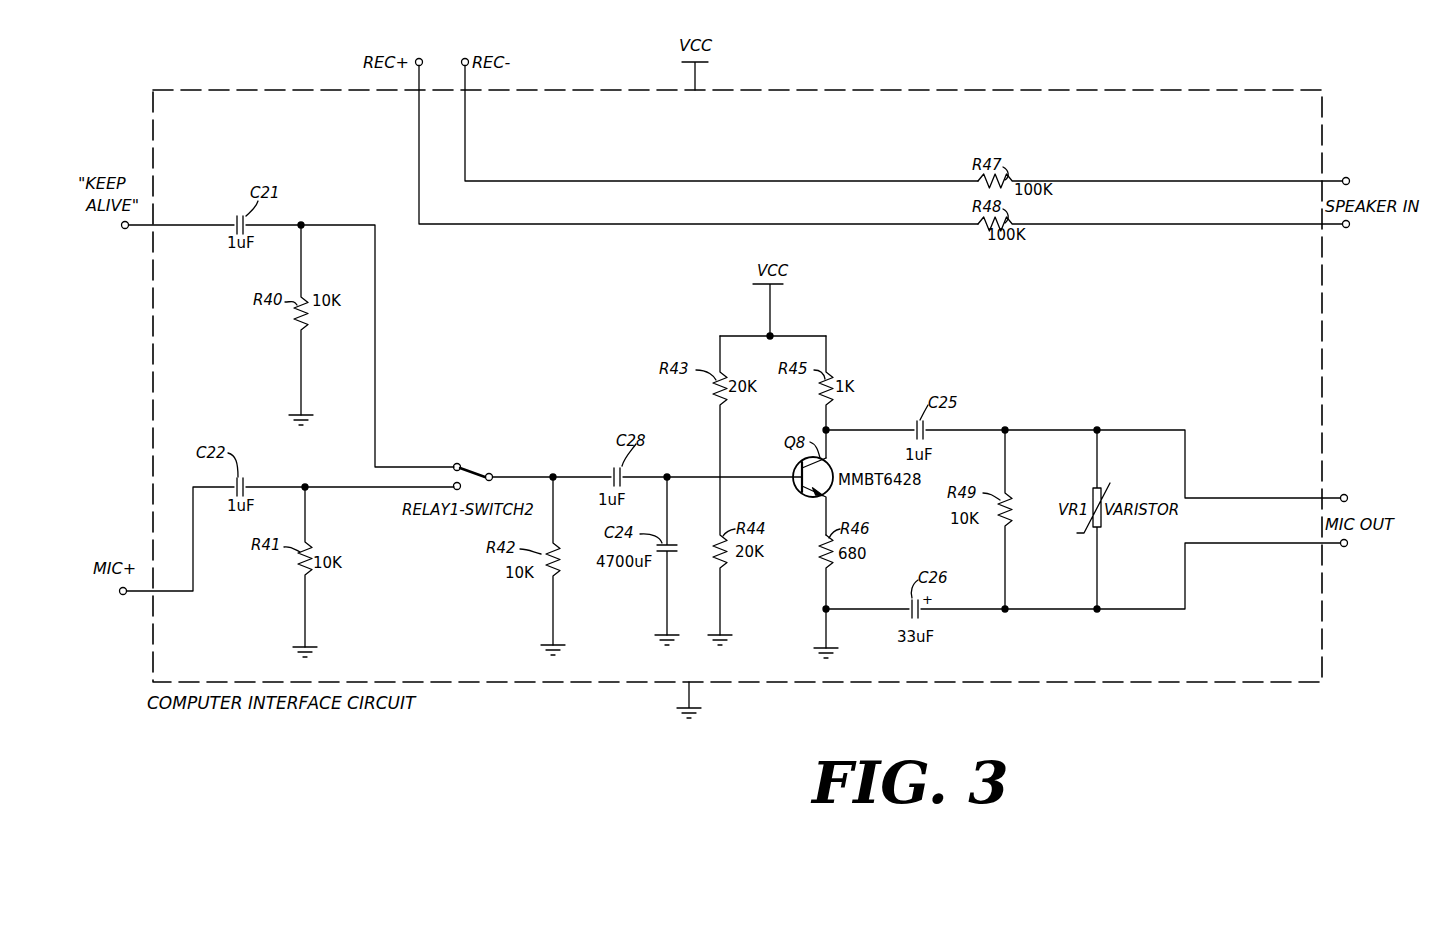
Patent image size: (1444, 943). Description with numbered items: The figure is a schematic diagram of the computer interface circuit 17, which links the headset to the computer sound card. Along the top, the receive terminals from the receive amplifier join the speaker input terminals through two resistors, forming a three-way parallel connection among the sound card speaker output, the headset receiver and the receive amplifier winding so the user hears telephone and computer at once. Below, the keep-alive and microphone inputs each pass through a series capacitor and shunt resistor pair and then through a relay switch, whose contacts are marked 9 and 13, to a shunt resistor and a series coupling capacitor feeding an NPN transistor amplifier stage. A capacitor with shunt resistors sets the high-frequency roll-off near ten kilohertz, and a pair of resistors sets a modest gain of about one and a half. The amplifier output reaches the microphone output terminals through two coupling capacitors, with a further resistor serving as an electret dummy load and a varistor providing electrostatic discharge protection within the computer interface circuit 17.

The computer interface circuit 17 is at (1098, 683).
The relay switch terminal 9 is at (449, 484).
The relay switch terminal 13 is at (482, 469).